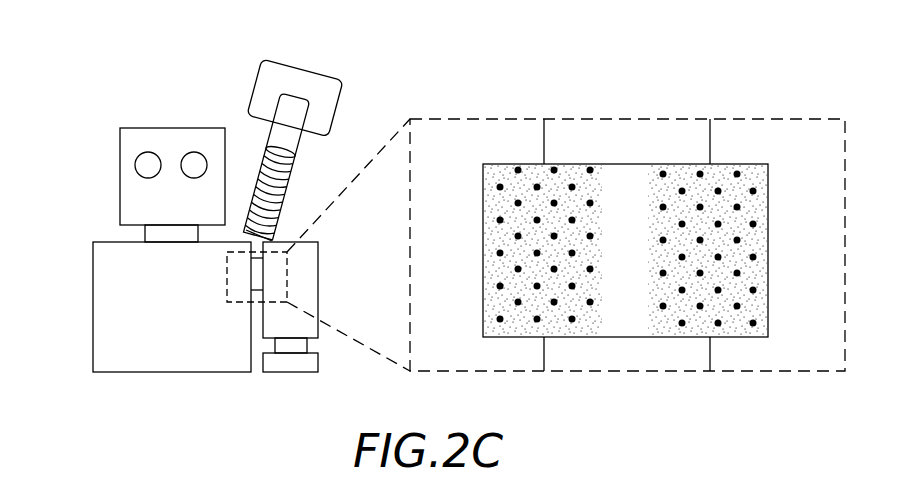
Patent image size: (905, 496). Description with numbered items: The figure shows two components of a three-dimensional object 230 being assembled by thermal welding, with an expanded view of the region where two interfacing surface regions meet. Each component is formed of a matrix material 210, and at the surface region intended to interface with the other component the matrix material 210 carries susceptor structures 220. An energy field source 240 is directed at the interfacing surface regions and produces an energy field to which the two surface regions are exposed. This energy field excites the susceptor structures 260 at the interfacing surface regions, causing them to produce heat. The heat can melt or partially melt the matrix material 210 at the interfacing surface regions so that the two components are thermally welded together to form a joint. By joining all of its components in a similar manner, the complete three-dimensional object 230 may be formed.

The matrix material 210 is at (626, 313).
The susceptor structures 220 is at (556, 207).
The three-dimensional object 230 is at (106, 212).
The energy field source 240 is at (336, 139).
The susceptor structures 260 is at (737, 173).